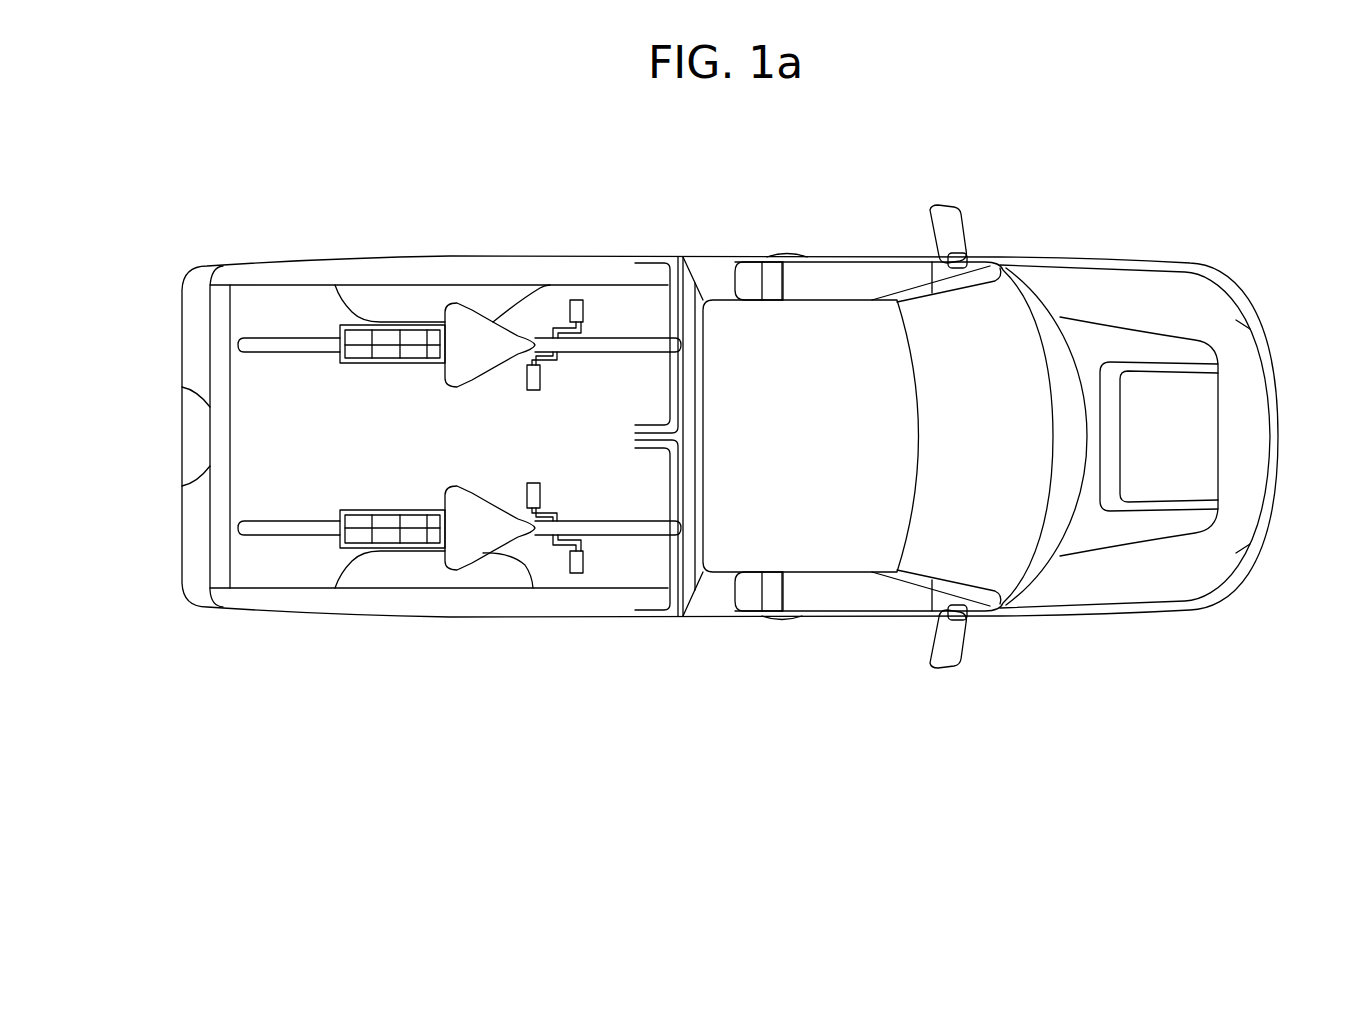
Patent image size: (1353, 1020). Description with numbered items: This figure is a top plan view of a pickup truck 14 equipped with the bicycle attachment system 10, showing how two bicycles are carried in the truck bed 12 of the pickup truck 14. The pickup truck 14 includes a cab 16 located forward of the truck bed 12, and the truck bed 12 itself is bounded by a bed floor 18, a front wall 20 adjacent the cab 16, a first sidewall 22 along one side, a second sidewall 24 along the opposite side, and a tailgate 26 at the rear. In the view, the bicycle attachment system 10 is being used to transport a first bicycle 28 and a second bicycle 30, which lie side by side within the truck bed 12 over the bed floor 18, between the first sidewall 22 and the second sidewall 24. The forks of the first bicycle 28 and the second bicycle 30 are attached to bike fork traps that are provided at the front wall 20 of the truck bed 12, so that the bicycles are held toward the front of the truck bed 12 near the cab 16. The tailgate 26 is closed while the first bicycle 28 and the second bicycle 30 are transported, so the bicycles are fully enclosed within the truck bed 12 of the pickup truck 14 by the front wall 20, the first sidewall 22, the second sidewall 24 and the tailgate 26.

The bicycle attachment system 10 is at (623, 618).
The truck bed 12 is at (258, 433).
The pickup truck 14 is at (1045, 250).
The cab 16 is at (765, 620).
The bed floor 18 is at (440, 450).
The front wall 20 is at (676, 497).
The first sidewall 22 is at (548, 292).
The second sidewall 24 is at (400, 588).
The tailgate 26 is at (215, 528).
The first bicycle 28 is at (592, 343).
The second bicycle 30 is at (470, 537).